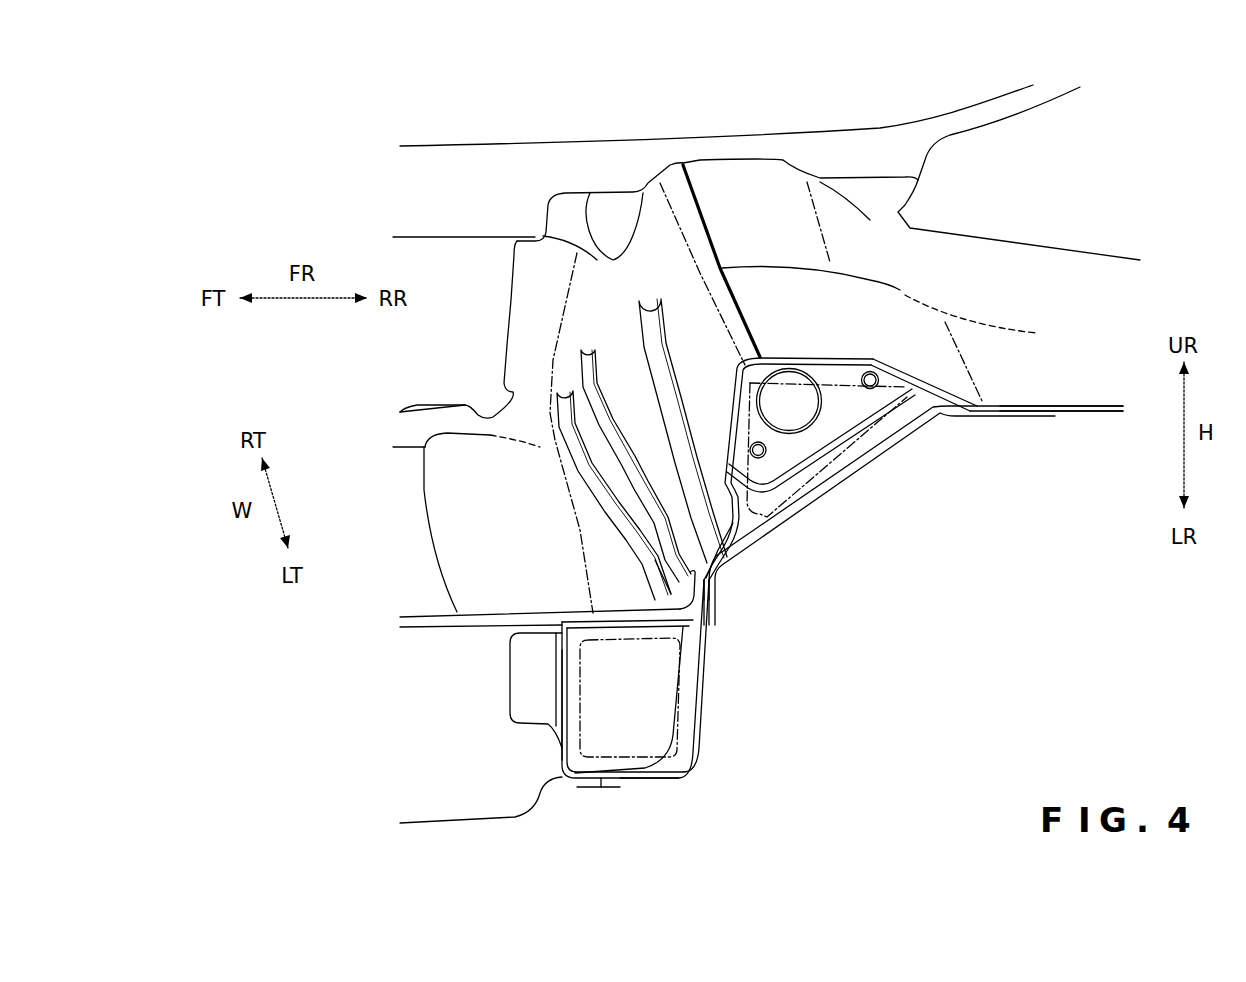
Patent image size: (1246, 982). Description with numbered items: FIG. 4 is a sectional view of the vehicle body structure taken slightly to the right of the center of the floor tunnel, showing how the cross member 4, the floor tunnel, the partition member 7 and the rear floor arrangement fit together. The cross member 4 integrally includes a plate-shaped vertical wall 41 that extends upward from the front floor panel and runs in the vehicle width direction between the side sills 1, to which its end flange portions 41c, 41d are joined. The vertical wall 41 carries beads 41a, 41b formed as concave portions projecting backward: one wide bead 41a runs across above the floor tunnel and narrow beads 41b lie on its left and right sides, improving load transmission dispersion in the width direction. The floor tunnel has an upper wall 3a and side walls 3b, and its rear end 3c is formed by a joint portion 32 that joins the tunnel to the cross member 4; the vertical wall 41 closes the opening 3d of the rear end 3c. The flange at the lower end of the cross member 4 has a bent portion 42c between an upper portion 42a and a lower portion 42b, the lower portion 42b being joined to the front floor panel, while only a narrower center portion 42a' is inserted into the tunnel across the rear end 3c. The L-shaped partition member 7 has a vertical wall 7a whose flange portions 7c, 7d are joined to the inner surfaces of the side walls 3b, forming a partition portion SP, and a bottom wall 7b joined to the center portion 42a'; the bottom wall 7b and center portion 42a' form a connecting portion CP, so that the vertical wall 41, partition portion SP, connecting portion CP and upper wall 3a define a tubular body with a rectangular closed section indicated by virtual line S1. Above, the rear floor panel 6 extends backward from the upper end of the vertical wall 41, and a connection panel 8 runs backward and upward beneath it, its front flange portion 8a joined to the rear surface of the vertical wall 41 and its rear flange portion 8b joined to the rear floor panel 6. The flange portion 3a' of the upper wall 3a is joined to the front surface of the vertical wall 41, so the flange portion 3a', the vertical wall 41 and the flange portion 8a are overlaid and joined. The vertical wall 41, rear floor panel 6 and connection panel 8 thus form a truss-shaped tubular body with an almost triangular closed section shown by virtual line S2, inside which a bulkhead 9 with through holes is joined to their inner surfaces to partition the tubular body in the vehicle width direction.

The side sill 1 is at (455, 150).
The vertical wall 41 is at (707, 657).
The bead 41a is at (645, 290).
The bead 41b is at (595, 343).
The flange portion 41c is at (513, 300).
The flange portion 41d is at (573, 203).
The bulkhead 9 is at (836, 372).
The rear floor panel 6 is at (890, 363).
The connection panel 8 is at (810, 503).
The flange portion 8a is at (713, 610).
The flange portion 8b is at (1020, 416).
The virtual line S2 is at (868, 445).
The virtual line S1 is at (677, 742).
The upper portion 42a is at (478, 407).
The center portion 42a' is at (667, 803).
The lower portion 42b is at (395, 445).
The bent portion 42c is at (400, 412).
The joint portion 32 is at (468, 603).
The upper wall 3a is at (527, 590).
The flange portion 3a' is at (733, 592).
The side wall 3b is at (470, 810).
The rear end 3c is at (660, 593).
The opening 3d is at (713, 762).
The cross member 4 is at (737, 652).
The partition member 7 is at (523, 763).
The vertical wall 7a is at (562, 707).
The bottom wall 7b is at (598, 790).
The flange portion 7c is at (510, 675).
The flange portion 7d is at (530, 622).
The partition portion SP is at (560, 723).
The connecting portion CP is at (633, 800).